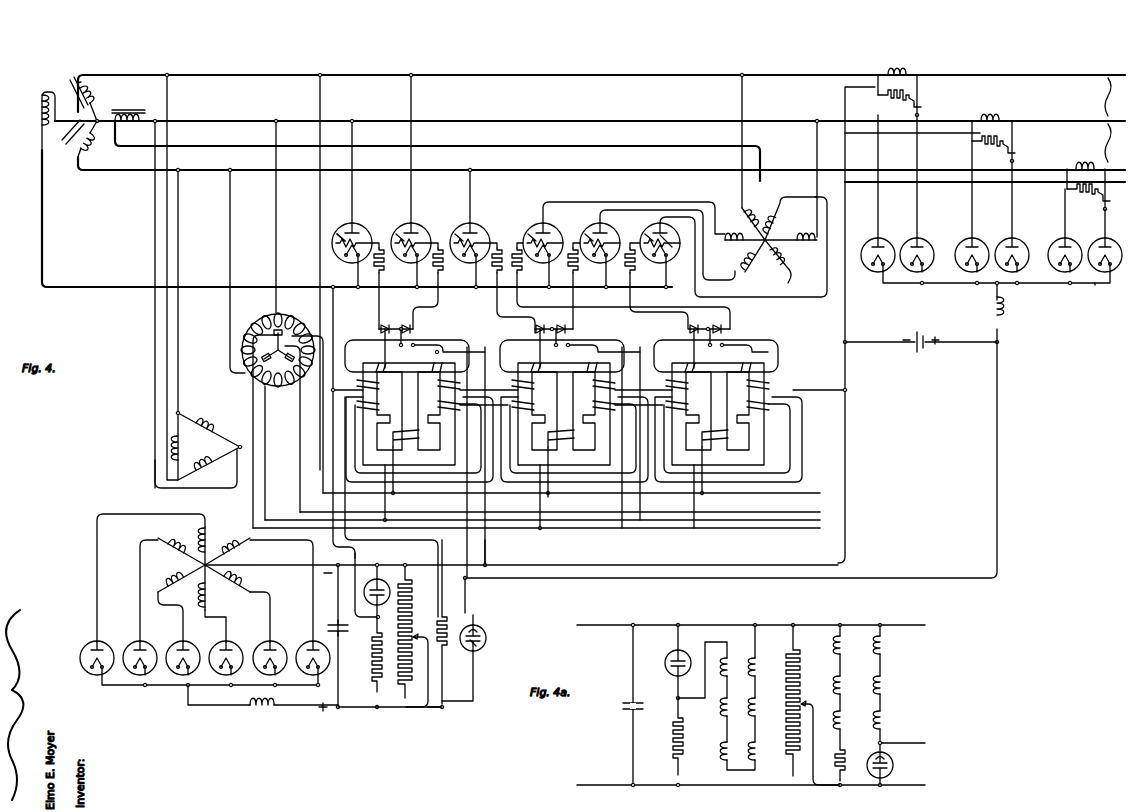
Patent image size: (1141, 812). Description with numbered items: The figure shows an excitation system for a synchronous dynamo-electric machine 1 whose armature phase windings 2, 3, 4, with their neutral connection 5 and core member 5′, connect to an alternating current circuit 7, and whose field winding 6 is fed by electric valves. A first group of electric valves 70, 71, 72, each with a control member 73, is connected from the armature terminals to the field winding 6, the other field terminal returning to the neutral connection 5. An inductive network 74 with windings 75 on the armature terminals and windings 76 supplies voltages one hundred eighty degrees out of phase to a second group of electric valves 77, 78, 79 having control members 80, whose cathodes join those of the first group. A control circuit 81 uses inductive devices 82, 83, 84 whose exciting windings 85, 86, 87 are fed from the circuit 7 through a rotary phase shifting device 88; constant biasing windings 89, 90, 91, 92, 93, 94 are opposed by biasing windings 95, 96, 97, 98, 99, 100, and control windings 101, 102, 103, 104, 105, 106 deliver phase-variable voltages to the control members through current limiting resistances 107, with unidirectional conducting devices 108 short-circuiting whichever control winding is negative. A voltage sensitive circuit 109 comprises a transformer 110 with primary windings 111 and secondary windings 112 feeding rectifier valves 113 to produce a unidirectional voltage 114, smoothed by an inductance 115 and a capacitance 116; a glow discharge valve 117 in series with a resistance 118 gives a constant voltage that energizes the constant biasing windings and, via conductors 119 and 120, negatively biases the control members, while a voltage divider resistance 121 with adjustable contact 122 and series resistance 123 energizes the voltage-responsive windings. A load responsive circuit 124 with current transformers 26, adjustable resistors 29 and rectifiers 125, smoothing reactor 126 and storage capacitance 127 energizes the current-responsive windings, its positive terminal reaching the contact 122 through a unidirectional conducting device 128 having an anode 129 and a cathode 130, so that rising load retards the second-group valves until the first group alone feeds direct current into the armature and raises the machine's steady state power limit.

In FIG. 4, the dynamo-electric machine 1 is at (58, 160).
In FIG. 4, the armature phase winding 2 is at (91, 95).
In FIG. 4, the armature phase winding 3 is at (130, 128).
In FIG. 4, the armature phase winding 4 is at (82, 134).
In FIG. 4, the neutral connection 5 is at (97, 120).
In FIG. 4, the core member 5′ is at (130, 109).
In FIG. 4, the field winding 6 is at (32, 124).
In FIG. 4, the alternating current circuit 7 is at (1118, 120).
In FIG. 4, the current transformer 26 is at (898, 70).
In FIG. 4, the adjustable resistor 29 is at (878, 101).
In FIG. 4, the electric valve 70 is at (362, 228).
In FIG. 4, the electric valve 71 is at (424, 228).
In FIG. 4, the electric valve 72 is at (480, 228).
In FIG. 4, the control member 73 is at (340, 232).
In FIG. 4, the inductive network 74 is at (789, 189).
In FIG. 4, the winding 75 is at (743, 221).
In FIG. 4, the winding 76 is at (790, 211).
In FIG. 4, the electric valve 77 is at (532, 228).
In FIG. 4, the electric valve 78 is at (591, 228).
In FIG. 4, the electric valve 79 is at (643, 228).
In FIG. 4, the control member 80 is at (668, 260).
In FIG. 4, the control circuit 81 is at (567, 551).
In FIG. 4, the inductive device 82 is at (413, 468).
In FIG. 4, the inductive device 83 is at (564, 429).
In FIG. 4, the inductive device 84 is at (718, 428).
In FIG. 4, the exciting winding 85 is at (420, 435).
In FIG. 4, the exciting winding 86 is at (571, 438).
In FIG. 4, the exciting winding 87 is at (725, 438).
In FIG. 4, the rotary phase shifting device 88 is at (306, 305).
In FIG. 4, the unidirectional biasing winding 89 is at (377, 386).
In FIG. 4A, the unidirectional biasing winding 89 is at (725, 667).
In FIG. 4, the unidirectional biasing winding 90 is at (436, 387).
In FIG. 4A, the unidirectional biasing winding 90 is at (725, 704).
In FIG. 4, the unidirectional biasing winding 91 is at (532, 379).
In FIG. 4A, the unidirectional biasing winding 91 is at (722, 748).
In FIG. 4, the unidirectional biasing winding 92 is at (593, 379).
In FIG. 4A, the unidirectional biasing winding 92 is at (758, 752).
In FIG. 4, the unidirectional biasing winding 93 is at (686, 379).
In FIG. 4A, the unidirectional biasing winding 93 is at (758, 706).
In FIG. 4, the unidirectional biasing winding 94 is at (747, 379).
In FIG. 4A, the unidirectional biasing winding 94 is at (758, 672).
In FIG. 4, the unidirectional biasing winding 95 is at (377, 404).
In FIG. 4A, the unidirectional biasing winding 95 is at (846, 724).
In FIG. 4, the unidirectional biasing winding 96 is at (436, 405).
In FIG. 4A, the unidirectional biasing winding 96 is at (887, 724).
In FIG. 4, the unidirectional biasing winding 97 is at (532, 406).
In FIG. 4A, the unidirectional biasing winding 97 is at (846, 690).
In FIG. 4, the unidirectional biasing winding 98 is at (593, 406).
In FIG. 4A, the unidirectional biasing winding 98 is at (887, 690).
In FIG. 4, the unidirectional biasing winding 99 is at (686, 406).
In FIG. 4A, the unidirectional biasing winding 99 is at (845, 652).
In FIG. 4, the unidirectional biasing winding 100 is at (745, 406).
In FIG. 4A, the unidirectional biasing winding 100 is at (887, 648).
In FIG. 4, the control winding 101 is at (378, 362).
In FIG. 4, the control winding 102 is at (436, 362).
In FIG. 4, the control winding 103 is at (562, 356).
In FIG. 4, the control winding 104 is at (603, 352).
In FIG. 4, the control winding 105 is at (716, 356).
In FIG. 4, the control winding 106 is at (746, 352).
In FIG. 4, the current limiting resistance 107 is at (380, 267).
In FIG. 4, the unidirectional conducting device 108 is at (412, 324).
In FIG. 4, the voltage sensitive circuit 109 is at (206, 728).
In FIG. 4, the transformer 110 is at (206, 510).
In FIG. 4, the primary winding 111 is at (184, 448).
In FIG. 4, the secondary winding 112 is at (213, 598).
In FIG. 4, the electric valve 113 is at (102, 644).
In FIG. 4, the source of unidirectional voltage 114 is at (318, 708).
In FIG. 4, the smoothing inductance 115 is at (272, 708).
In FIG. 4, the capacitance 116 is at (343, 629).
In FIG. 4A, the capacitance 116 is at (638, 703).
In FIG. 4, the glow discharge valve 117 is at (390, 582).
In FIG. 4A, the glow discharge valve 117 is at (667, 654).
In FIG. 4, the resistance 118 is at (372, 668).
In FIG. 4A, the resistance 118 is at (674, 746).
In FIG. 4, the conductor 119 is at (356, 553).
In FIG. 4, the conductor 120 is at (486, 546).
In FIG. 4, the resistance 121 is at (410, 586).
In FIG. 4A, the resistance 121 is at (801, 673).
In FIG. 4, the adjustable contact 122 is at (414, 632).
In FIG. 4A, the adjustable contact 122 is at (804, 703).
In FIG. 4, the resistance 123 is at (446, 613).
In FIG. 4A, the resistance 123 is at (852, 756).
In FIG. 4, the load responsive circuit 124 is at (1096, 326).
In FIG. 4, the rectifier 125 is at (915, 239).
In FIG. 4, the smoothing reactor 126 is at (1004, 320).
In FIG. 4, the capacitance 127 is at (918, 331).
In FIG. 4, the unidirectional conducting device 128 is at (481, 632).
In FIG. 4A, the unidirectional conducting device 128 is at (895, 766).
In FIG. 4, the anode 129 is at (478, 650).
In FIG. 4, the cathode 130 is at (472, 622).